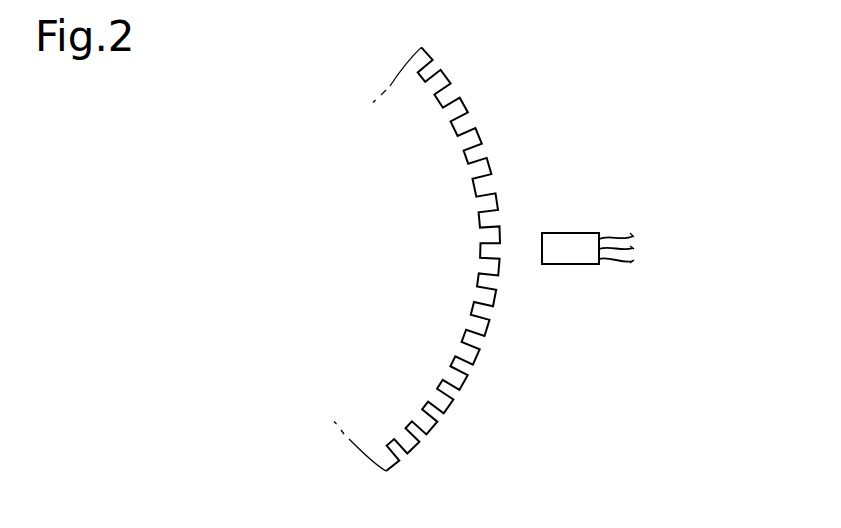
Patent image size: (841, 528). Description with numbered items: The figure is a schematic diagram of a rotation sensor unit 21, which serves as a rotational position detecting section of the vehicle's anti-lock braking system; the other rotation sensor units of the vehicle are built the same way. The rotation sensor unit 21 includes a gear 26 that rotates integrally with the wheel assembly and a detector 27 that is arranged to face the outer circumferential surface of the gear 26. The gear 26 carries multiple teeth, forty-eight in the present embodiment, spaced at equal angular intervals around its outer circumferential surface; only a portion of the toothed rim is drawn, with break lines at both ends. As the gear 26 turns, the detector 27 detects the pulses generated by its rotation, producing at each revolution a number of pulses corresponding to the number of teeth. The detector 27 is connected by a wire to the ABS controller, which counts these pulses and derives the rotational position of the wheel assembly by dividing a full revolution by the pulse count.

The first rotation sensor unit 21 is at (559, 66).
The gear 26 is at (430, 112).
The detector 27 is at (572, 232).